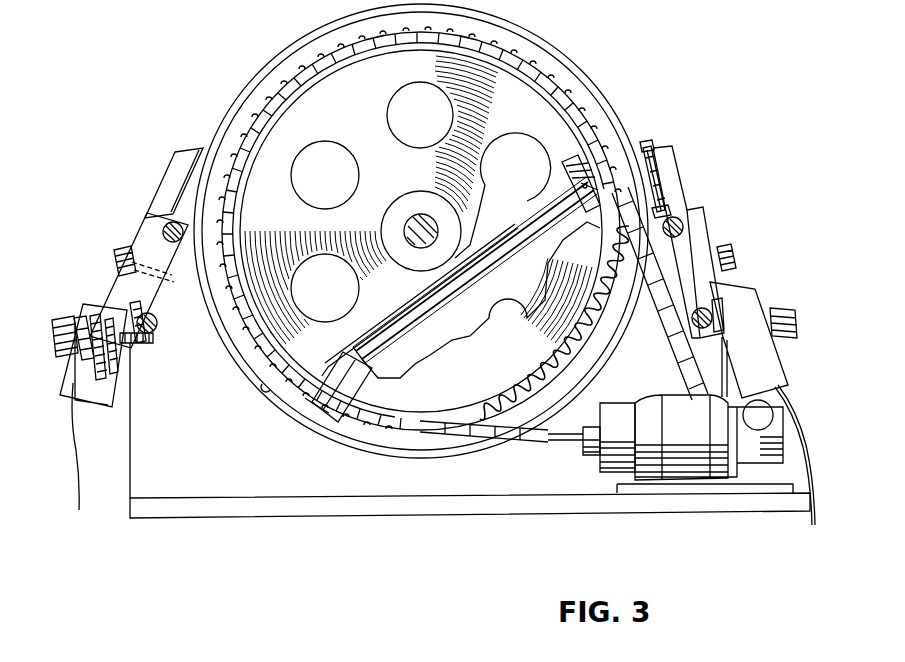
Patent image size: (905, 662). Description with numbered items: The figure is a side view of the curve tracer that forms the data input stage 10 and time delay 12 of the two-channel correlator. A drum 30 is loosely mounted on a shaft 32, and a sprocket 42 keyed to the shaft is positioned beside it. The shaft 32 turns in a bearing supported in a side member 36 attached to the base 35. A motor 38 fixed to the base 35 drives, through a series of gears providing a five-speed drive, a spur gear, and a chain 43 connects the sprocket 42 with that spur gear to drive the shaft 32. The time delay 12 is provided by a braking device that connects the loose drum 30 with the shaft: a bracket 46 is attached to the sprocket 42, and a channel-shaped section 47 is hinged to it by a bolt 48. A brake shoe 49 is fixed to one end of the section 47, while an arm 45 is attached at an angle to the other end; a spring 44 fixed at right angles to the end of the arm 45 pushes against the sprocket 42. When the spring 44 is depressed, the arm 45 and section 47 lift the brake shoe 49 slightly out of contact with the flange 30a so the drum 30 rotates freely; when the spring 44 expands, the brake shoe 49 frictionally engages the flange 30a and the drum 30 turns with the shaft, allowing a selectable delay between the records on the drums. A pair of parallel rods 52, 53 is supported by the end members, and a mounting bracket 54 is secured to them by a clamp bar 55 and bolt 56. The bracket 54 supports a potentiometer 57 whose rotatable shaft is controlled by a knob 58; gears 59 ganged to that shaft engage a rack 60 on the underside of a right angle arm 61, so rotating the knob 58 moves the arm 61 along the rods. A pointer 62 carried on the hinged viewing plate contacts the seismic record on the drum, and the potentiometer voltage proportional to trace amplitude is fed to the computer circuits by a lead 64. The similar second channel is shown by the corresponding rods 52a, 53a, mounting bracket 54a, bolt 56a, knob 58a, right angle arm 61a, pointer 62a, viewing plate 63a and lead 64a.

The data input stage 10 is at (267, 70).
The time delay 12 is at (300, 400).
The drum 30 is at (552, 42).
The flange 30a is at (367, 448).
The shaft 32 is at (405, 226).
The base 35 is at (287, 505).
The side member 36 is at (138, 447).
The motor 38 is at (600, 467).
The sprocket 42 is at (287, 180).
The chain 43 is at (547, 437).
The spring 44 is at (558, 158).
The arm 45 is at (538, 208).
The bracket 46 is at (380, 360).
The channel-shaped section 47 is at (333, 363).
The bolt 48 is at (265, 387).
The brake shoe 49 is at (327, 423).
The parallel rod 52 is at (158, 213).
The parallel rod 52a is at (680, 222).
The parallel rod 53 is at (157, 325).
The parallel rod 53a is at (693, 330).
The mounting bracket 54 is at (118, 300).
The mounting bracket 54a is at (747, 293).
The clamp bar 55 is at (160, 302).
The bolt 56 is at (122, 252).
The bolt 56a is at (727, 247).
The potentiometer 57 is at (80, 352).
The knob 58 is at (67, 322).
The knob 58a is at (787, 347).
The gears 59 is at (118, 376).
The rack 60 is at (132, 342).
The right angle arm 61 is at (168, 173).
The right angle arm 61a is at (660, 152).
The pointer 62 is at (205, 197).
The pointer 62a is at (660, 172).
The viewing plate 63a is at (650, 143).
The lead 64 is at (75, 482).
The lead 64a is at (807, 452).